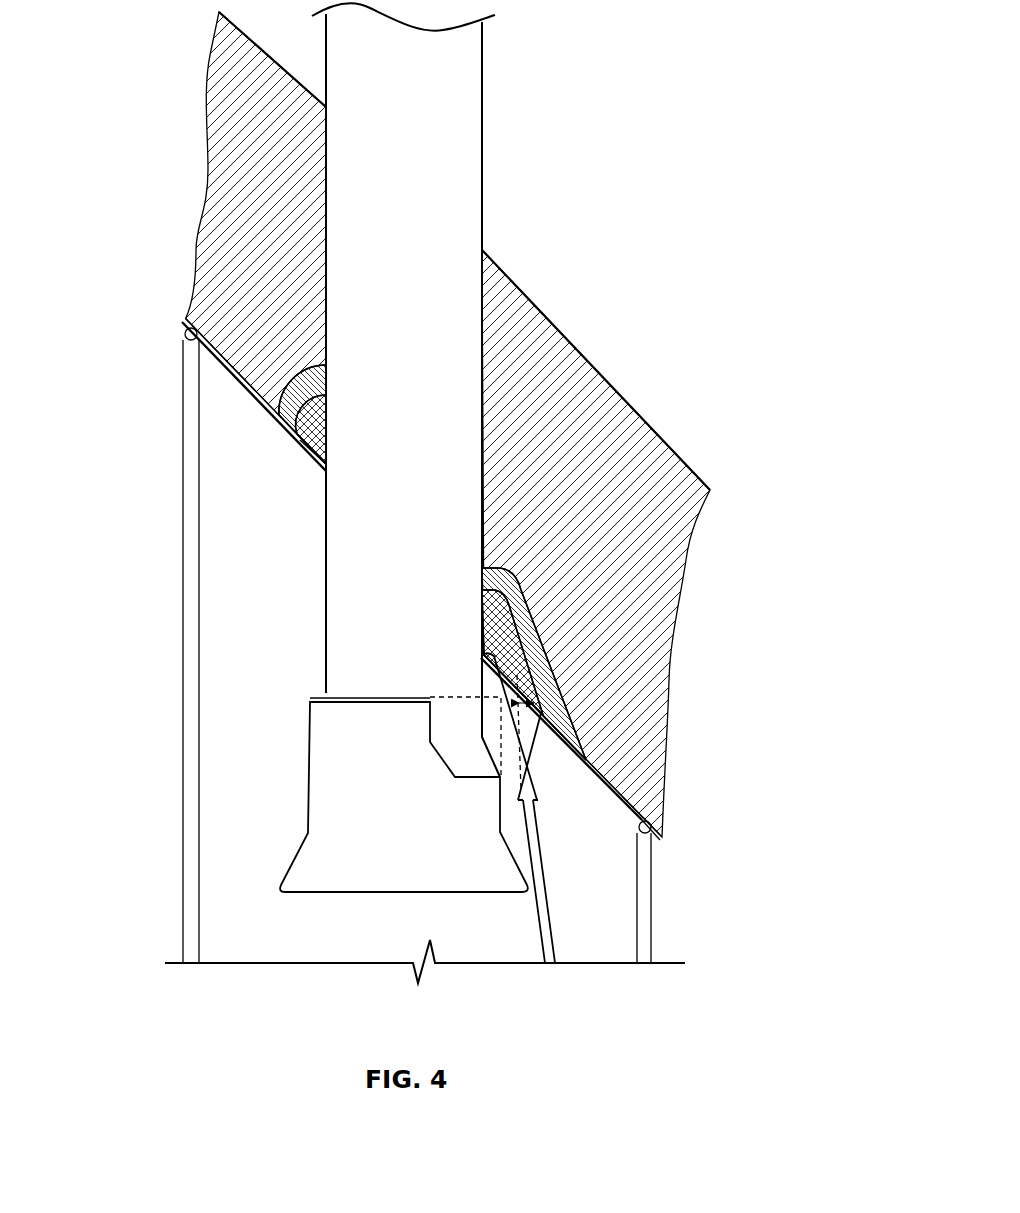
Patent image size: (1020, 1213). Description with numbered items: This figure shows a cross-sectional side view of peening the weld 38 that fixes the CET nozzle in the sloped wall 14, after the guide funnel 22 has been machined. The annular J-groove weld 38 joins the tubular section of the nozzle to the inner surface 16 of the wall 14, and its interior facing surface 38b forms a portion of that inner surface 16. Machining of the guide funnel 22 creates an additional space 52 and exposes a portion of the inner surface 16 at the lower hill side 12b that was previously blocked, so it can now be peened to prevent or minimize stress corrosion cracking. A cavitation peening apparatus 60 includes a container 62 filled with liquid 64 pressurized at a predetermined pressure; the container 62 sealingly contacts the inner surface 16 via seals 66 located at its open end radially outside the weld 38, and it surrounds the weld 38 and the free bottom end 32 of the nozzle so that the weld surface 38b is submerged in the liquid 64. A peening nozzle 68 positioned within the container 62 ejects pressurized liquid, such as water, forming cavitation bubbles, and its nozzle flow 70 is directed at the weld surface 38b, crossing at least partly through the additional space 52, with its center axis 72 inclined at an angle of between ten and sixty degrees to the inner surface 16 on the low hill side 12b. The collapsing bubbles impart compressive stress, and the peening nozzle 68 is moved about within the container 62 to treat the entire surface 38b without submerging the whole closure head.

The wall 14 is at (626, 442).
The inner surface 16 is at (275, 432).
The weld 38 is at (320, 428).
The interior facing surface 38b is at (322, 470).
The seals 66 is at (185, 332).
The container 62 is at (185, 748).
The liquid 64 is at (258, 650).
The guide funnel 22 is at (320, 782).
The additional space 52 is at (468, 686).
The center axis 72 is at (518, 732).
The nozzle flow 70 is at (545, 730).
The peening nozzle 68 is at (537, 795).
The cavitation peening apparatus 60 is at (528, 940).
The lower hill side 12b is at (586, 852).
The free bottom end 32 is at (268, 890).